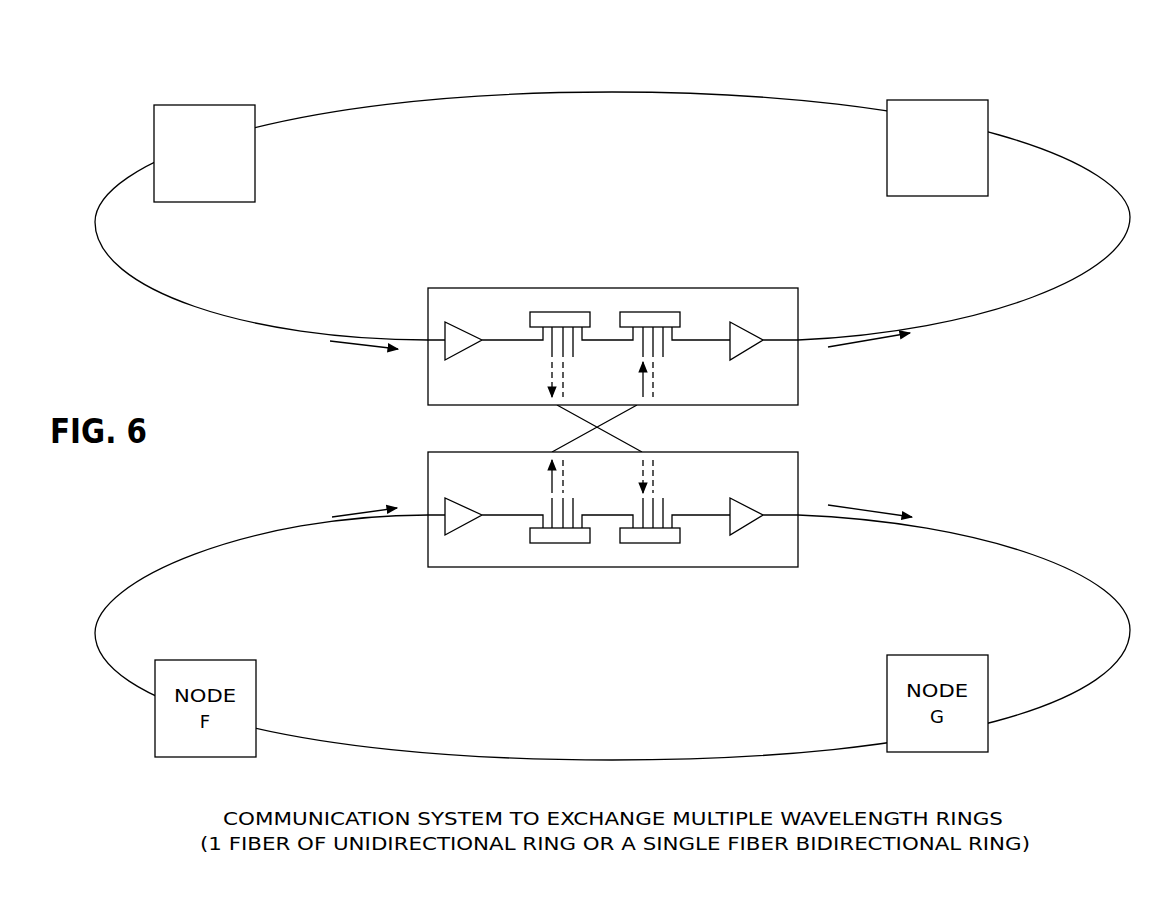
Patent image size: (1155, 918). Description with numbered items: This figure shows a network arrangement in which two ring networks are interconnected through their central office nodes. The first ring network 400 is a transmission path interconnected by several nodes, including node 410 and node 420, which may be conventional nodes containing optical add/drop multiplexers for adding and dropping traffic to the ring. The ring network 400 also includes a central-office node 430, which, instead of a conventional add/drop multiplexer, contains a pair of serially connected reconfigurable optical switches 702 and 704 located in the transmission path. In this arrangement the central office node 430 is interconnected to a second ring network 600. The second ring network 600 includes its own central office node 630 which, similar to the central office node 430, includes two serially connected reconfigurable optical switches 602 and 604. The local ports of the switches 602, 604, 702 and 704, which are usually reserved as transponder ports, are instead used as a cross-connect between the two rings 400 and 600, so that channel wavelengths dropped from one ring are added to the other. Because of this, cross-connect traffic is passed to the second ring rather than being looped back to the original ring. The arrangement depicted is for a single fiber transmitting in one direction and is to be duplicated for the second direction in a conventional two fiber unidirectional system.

The ring network 400 is at (600, 92).
The node 410 is at (204, 105).
The node 420 is at (937, 100).
The central-office node 430 is at (473, 288).
The second ring network 600 is at (281, 530).
The central office node 630 is at (473, 567).
The reconfigurable optical switch 602 is at (565, 543).
The reconfigurable optical switch 604 is at (657, 543).
The reconfigurable optical switch 702 is at (565, 312).
The reconfigurable optical switch 704 is at (657, 312).